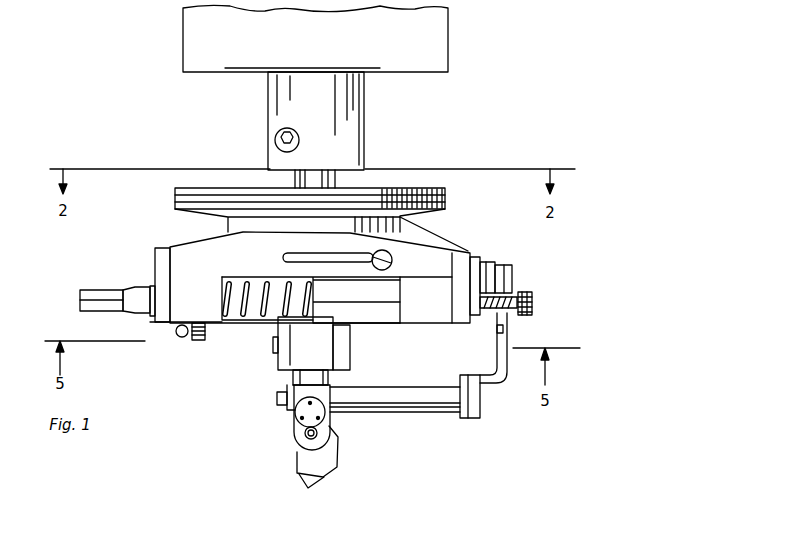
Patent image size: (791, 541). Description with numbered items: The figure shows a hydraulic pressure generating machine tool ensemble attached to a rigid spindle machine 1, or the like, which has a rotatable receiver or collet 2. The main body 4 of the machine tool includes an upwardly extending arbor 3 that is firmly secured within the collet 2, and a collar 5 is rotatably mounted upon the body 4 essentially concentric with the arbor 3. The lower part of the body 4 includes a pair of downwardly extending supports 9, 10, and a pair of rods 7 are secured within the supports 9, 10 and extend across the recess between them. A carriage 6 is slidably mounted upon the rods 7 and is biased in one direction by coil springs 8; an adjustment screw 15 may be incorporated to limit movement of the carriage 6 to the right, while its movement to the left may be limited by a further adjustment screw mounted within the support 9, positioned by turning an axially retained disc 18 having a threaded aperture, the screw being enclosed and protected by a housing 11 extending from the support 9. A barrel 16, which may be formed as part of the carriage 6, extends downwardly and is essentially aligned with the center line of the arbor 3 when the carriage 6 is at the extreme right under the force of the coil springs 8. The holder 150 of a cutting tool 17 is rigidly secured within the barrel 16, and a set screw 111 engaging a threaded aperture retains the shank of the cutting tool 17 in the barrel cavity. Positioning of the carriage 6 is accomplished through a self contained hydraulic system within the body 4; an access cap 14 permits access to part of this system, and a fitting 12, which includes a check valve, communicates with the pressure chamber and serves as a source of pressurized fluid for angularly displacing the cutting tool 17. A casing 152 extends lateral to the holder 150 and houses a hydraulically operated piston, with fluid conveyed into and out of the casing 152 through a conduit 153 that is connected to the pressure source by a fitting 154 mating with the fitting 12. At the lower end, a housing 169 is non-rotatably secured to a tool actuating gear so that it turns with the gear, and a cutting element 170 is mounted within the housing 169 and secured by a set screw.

The rigid spindle machine 1 is at (450, 48).
The collet 2 is at (366, 136).
The arbor 3 is at (338, 180).
The main body 4 is at (430, 243).
The collar 5 is at (443, 192).
The carriage 6 is at (365, 323).
The rods 7 is at (262, 318).
The coil springs 8 is at (245, 317).
The support 9 is at (170, 328).
The support 10 is at (430, 325).
The housing 11 is at (105, 290).
The fitting 12 is at (489, 268).
The access cap 14 is at (475, 262).
The adjustment screw 15 is at (533, 301).
The barrel 16 is at (350, 355).
The cutting tool 17 is at (290, 421).
The disc 18 is at (203, 342).
The set screw 111 is at (275, 345).
The holder 150 is at (290, 378).
The casing 152 is at (443, 388).
The conduit 153 is at (278, 400).
The fitting 154 is at (512, 267).
The housing 169 is at (338, 452).
The cutting element 170 is at (310, 483).